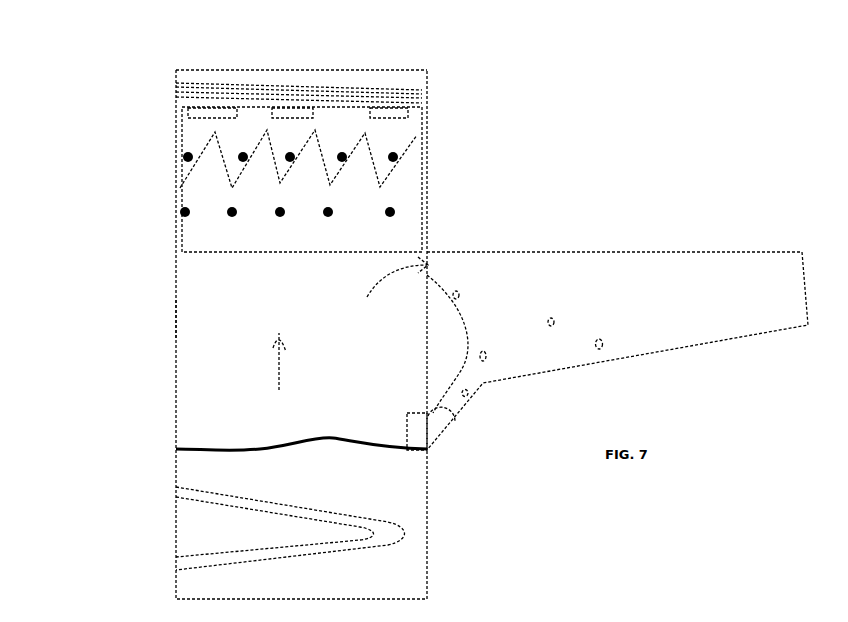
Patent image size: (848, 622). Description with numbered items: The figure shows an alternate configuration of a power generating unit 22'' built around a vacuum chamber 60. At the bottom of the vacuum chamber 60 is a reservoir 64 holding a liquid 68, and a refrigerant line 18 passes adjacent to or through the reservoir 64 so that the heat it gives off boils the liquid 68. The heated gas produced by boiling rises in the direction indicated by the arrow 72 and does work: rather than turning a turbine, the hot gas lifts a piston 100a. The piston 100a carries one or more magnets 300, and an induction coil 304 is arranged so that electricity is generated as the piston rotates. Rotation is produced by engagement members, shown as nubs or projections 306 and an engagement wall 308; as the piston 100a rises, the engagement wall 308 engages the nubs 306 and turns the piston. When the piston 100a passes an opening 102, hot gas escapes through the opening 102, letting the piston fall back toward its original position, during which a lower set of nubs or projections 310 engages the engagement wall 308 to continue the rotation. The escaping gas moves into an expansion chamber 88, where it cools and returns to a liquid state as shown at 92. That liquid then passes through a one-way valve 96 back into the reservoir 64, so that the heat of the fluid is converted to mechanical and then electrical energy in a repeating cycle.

The power generating unit 22'' is at (225, 334).
The induction coil 304 is at (408, 87).
The magnets 300 is at (213, 112).
The piston 100a is at (418, 187).
The nubs or projections 306 is at (182, 153).
The engagement wall 308 is at (178, 172).
The lower set of nubs or projections 310 is at (178, 212).
The vacuum chamber 60 is at (198, 317).
The arrow 72 is at (279, 365).
The opening 102 is at (430, 253).
The expansion chamber 88 is at (657, 323).
The liquid state 92 is at (458, 413).
The one-way valve 96 is at (418, 433).
The liquid 68 is at (207, 462).
The reservoir 64 is at (192, 525).
The refrigerant line 18 is at (395, 525).